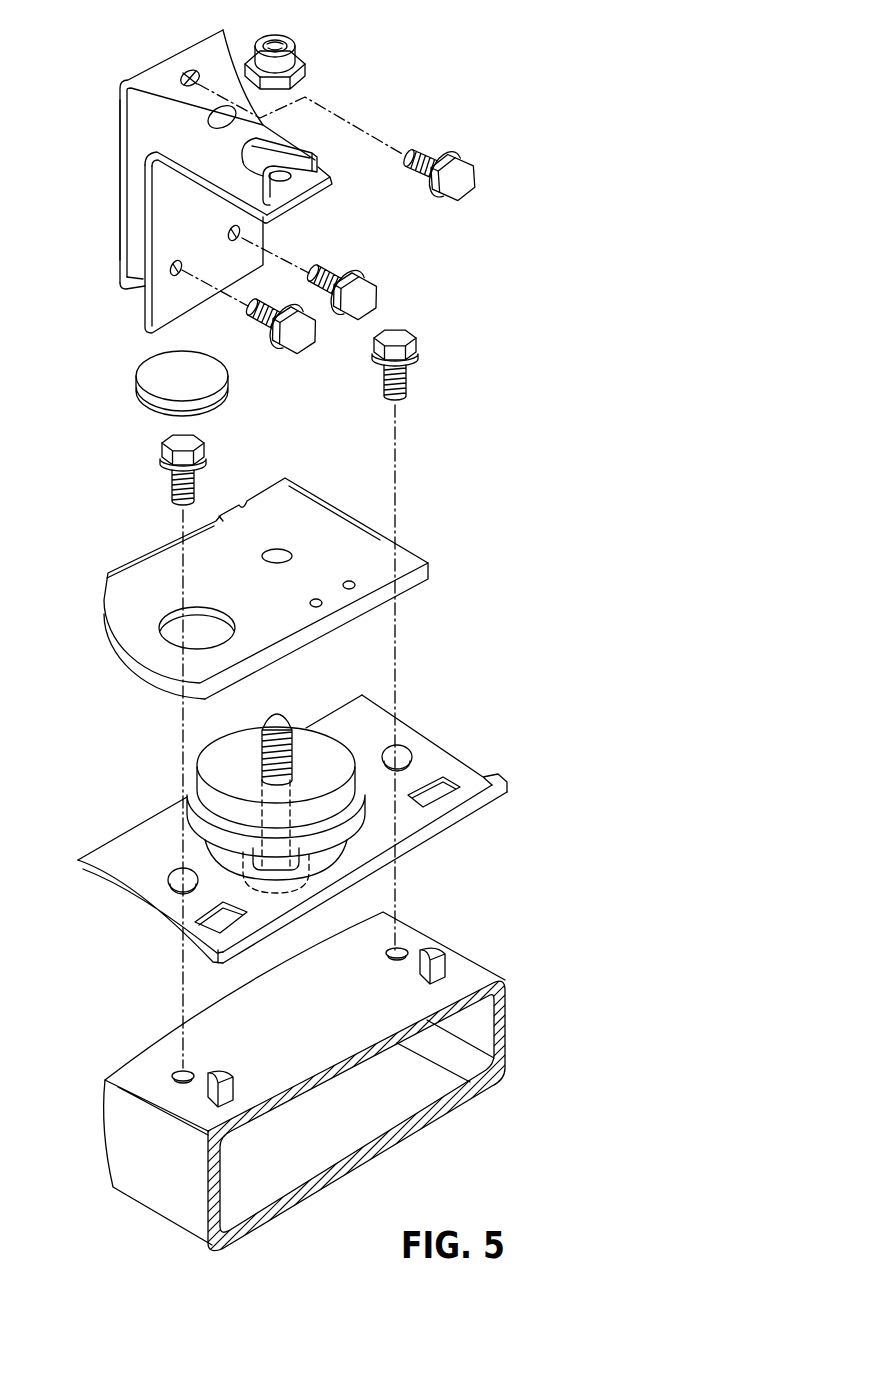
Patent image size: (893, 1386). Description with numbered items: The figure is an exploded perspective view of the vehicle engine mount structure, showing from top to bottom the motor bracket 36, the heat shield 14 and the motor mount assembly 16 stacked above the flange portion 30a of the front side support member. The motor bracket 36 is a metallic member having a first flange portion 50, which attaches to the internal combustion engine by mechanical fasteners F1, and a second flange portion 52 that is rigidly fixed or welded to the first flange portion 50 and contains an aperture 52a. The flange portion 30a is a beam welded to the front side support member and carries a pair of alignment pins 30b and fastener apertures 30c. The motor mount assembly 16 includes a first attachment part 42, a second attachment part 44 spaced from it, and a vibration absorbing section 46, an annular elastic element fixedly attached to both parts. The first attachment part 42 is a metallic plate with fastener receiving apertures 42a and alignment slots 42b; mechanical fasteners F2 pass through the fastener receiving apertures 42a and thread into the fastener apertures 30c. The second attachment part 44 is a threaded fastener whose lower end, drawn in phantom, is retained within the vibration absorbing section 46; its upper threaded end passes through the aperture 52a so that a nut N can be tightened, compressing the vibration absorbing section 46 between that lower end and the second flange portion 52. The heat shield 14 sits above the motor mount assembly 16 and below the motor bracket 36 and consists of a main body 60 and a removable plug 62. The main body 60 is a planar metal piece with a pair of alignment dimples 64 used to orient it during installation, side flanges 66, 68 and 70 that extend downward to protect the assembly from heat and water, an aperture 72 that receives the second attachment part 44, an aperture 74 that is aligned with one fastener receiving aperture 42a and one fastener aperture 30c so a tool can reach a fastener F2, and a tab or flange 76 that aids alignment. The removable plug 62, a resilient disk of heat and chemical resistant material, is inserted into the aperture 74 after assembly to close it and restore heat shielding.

The motor bracket 36 is at (190, 34).
The first flange portion 50 is at (119, 140).
The second flange portion 52 is at (310, 205).
The aperture 52a is at (272, 160).
The nut N is at (300, 70).
The mechanical fasteners F1 is at (465, 186).
The mechanical fasteners F2 is at (398, 340).
The removable plug 62 is at (167, 371).
The heat shield 14 is at (393, 562).
The side flange 70 is at (158, 546).
The side flange 68 is at (322, 497).
The tab or flange 76 is at (217, 524).
The aperture 72 is at (278, 551).
The alignment dimples 64 is at (348, 582).
The side flange 66 is at (410, 583).
The main body 60 is at (125, 603).
The aperture 74 is at (177, 645).
The vibration absorbing section 46 is at (225, 762).
The second attachment part 44 is at (293, 740).
The motor mount assembly 16 is at (440, 765).
The first attachment part 42 is at (472, 772).
The fastener receiving apertures 42a is at (178, 890).
The alignment slots 42b is at (203, 922).
The flange portion 30a is at (465, 970).
The alignment pins 30b is at (230, 1080).
The fastener apertures 30c is at (180, 1068).